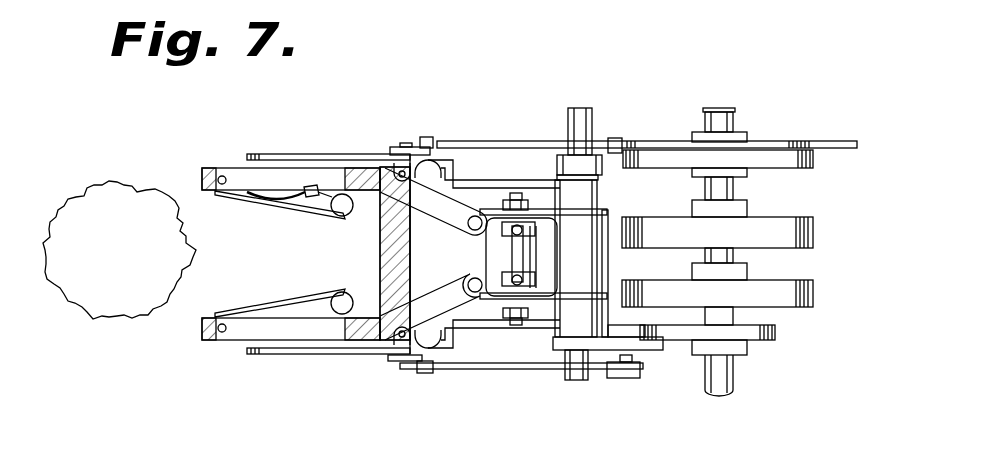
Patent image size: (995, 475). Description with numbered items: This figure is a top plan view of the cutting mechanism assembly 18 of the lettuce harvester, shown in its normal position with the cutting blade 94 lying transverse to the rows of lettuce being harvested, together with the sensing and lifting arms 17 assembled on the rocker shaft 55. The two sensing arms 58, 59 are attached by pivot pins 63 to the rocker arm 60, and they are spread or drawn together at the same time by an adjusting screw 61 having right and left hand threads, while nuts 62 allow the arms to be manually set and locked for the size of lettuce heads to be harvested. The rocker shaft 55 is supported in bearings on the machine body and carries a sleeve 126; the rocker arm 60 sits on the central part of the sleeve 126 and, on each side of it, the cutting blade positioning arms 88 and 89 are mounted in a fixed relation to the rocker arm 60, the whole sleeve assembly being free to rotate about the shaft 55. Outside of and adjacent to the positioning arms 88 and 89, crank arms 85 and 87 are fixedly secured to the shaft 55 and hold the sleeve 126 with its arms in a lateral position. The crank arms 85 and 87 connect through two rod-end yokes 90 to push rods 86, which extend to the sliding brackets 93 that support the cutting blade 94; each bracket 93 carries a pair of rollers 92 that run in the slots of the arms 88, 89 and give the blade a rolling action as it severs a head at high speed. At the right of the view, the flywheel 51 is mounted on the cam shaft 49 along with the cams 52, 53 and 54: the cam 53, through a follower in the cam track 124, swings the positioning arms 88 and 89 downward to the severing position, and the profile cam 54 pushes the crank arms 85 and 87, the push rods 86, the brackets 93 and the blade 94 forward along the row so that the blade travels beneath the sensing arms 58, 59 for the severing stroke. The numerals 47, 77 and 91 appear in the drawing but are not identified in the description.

The sensing and lifting arms 17 is at (180, 322).
The cutting mechanism assembly 18 is at (394, 130).
The rod 47 is at (840, 142).
The cam shaft 49 is at (714, 108).
The flywheel 51 is at (773, 150).
The cam 52 is at (790, 217).
The cam 53 is at (790, 281).
The profile cam 54 is at (765, 340).
The rocker shaft 55 is at (582, 108).
The sensing arm 58 is at (212, 340).
The sensing arm 59 is at (208, 168).
The rocker arm 60 is at (650, 255).
The adjusting screw 61 is at (513, 195).
The nuts 62 is at (502, 318).
The pivot pins 63 is at (465, 226).
The bolt 77 is at (510, 276).
The crank arm 85 is at (652, 350).
The push rods 86 is at (523, 141).
The crank arm 87 is at (605, 165).
The cutting blade positioning arm 88 is at (487, 183).
The cutting blade positioning arm 89 is at (530, 330).
The rod-end yokes 90 is at (618, 138).
The clamp 91 is at (425, 375).
The rollers 92 is at (441, 160).
The sliding brackets 93 is at (395, 163).
The cutting blade 94 is at (378, 260).
The cam track 124 is at (742, 474).
The sleeve 126 is at (521, 223).